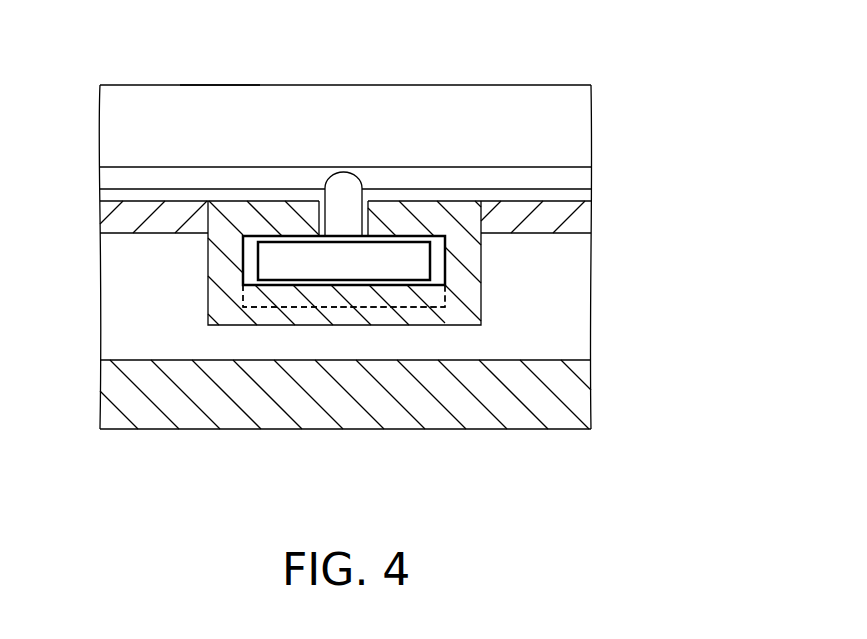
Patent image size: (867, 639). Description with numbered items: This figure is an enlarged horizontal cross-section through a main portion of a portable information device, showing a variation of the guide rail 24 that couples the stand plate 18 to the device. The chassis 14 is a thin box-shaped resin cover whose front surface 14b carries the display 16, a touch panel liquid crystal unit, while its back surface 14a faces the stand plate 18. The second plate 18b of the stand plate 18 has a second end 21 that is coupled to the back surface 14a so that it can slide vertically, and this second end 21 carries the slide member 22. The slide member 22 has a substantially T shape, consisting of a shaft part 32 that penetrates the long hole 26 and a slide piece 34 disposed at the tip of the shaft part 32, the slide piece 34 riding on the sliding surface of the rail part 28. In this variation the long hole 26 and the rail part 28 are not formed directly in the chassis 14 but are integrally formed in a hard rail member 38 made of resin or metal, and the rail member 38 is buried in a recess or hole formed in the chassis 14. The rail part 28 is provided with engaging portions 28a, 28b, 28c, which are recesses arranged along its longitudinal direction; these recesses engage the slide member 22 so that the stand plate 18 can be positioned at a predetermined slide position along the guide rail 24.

The chassis 14 is at (382, 345).
The back surface of the chassis 14a is at (129, 203).
The front surface of the chassis 14b is at (190, 430).
The display 16 is at (134, 420).
The stand plate 18 is at (165, 81).
The second plate 18b is at (218, 98).
The second end 21 is at (533, 182).
The slide member 22 is at (344, 140).
The guide rail 24 is at (395, 368).
The long hole 26 is at (324, 221).
The rail part 28 is at (395, 381).
The engaging portion 28a is at (423, 293).
The engaging portion 28b is at (368, 381).
The engaging portion 28c is at (443, 381).
The shaft part 32 is at (338, 182).
The slide piece 34 is at (395, 263).
The rail member 38 is at (237, 334).